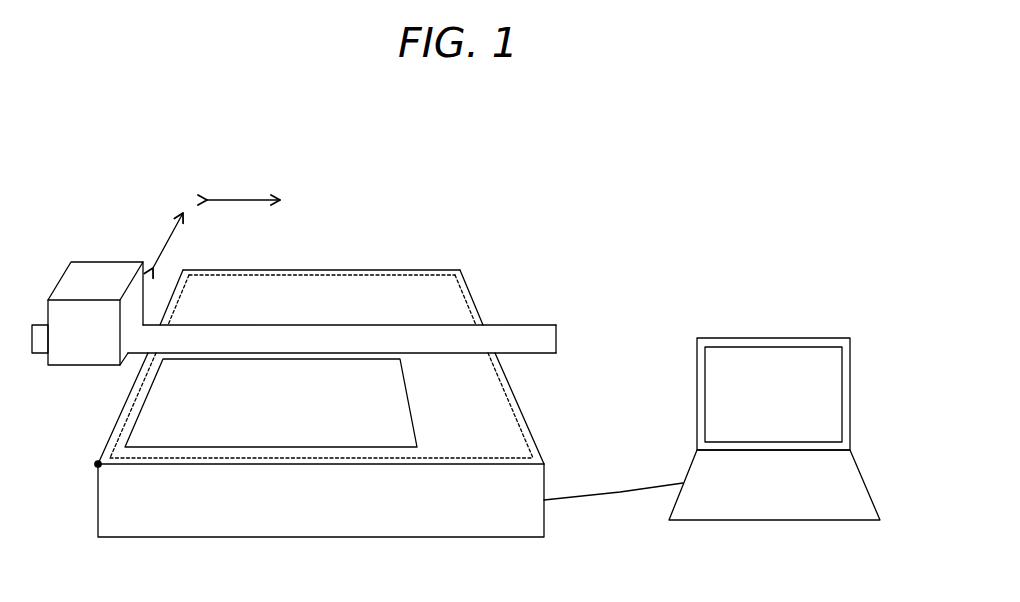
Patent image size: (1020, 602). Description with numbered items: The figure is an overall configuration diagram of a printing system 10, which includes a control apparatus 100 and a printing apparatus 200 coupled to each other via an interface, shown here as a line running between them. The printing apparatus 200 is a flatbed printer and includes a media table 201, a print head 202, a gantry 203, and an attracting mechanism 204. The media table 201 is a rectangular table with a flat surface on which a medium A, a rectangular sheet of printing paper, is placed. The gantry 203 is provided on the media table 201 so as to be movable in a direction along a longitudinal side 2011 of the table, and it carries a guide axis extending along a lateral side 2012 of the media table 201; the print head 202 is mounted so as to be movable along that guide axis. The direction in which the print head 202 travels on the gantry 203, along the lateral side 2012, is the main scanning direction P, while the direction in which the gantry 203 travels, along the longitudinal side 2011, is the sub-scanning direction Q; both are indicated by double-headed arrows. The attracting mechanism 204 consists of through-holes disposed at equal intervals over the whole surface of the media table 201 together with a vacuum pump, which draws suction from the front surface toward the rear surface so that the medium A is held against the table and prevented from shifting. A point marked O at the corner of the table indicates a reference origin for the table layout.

The printing system 10 is at (845, 126).
The control apparatus 100 is at (719, 416).
The printing apparatus 200 is at (317, 374).
The media table 201 is at (322, 417).
The longitudinal side 2011 is at (347, 367).
The lateral side 2012 is at (346, 519).
The print head 202 is at (86, 299).
The gantry 203 is at (318, 325).
The attracting mechanism 204 is at (325, 358).
The medium A is at (247, 403).
The origin O is at (71, 450).
The main scanning direction P is at (252, 186).
The sub-scanning direction Q is at (151, 236).